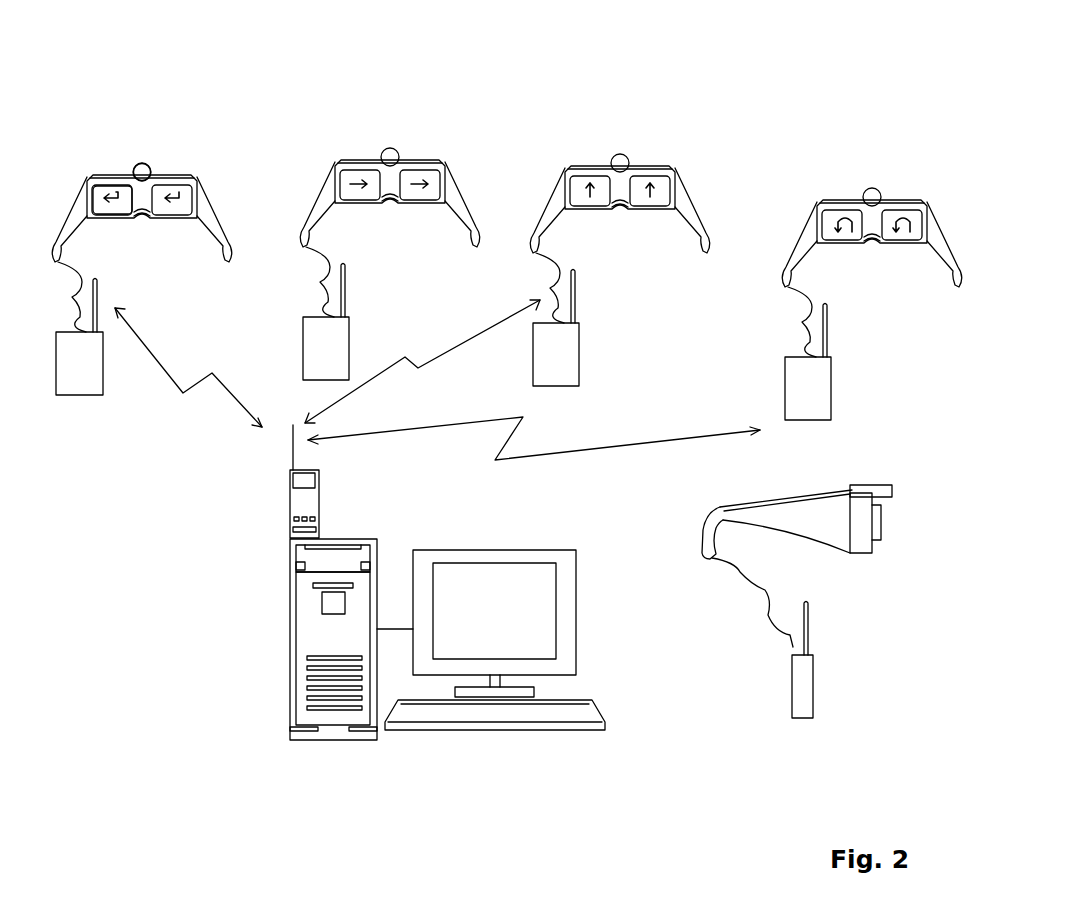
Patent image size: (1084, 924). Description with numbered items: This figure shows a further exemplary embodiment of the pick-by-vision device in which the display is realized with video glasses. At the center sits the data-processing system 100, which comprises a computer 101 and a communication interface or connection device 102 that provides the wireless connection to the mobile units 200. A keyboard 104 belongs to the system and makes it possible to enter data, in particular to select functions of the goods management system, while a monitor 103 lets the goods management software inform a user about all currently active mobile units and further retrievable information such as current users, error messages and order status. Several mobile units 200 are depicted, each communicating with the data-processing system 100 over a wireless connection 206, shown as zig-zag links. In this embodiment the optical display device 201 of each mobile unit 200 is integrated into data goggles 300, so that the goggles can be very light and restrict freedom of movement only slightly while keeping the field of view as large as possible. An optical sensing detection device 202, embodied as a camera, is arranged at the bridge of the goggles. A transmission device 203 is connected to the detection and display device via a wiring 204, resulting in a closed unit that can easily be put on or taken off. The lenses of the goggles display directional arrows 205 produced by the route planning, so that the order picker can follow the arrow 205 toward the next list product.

The data-processing system 100 is at (385, 615).
The computer 101 is at (307, 658).
The communication interface 102 is at (300, 500).
The monitor 103 is at (538, 617).
The keyboard 104 is at (443, 710).
The mobile unit 200 is at (153, 64).
The optical display device 201 is at (103, 202).
The optical sensing detection device 202 is at (140, 180).
The transmission device 203 is at (95, 377).
The wiring 204 is at (90, 322).
The directional arrow 205 is at (113, 197).
The wireless connection 206 is at (165, 375).
The data goggles 300 is at (213, 217).